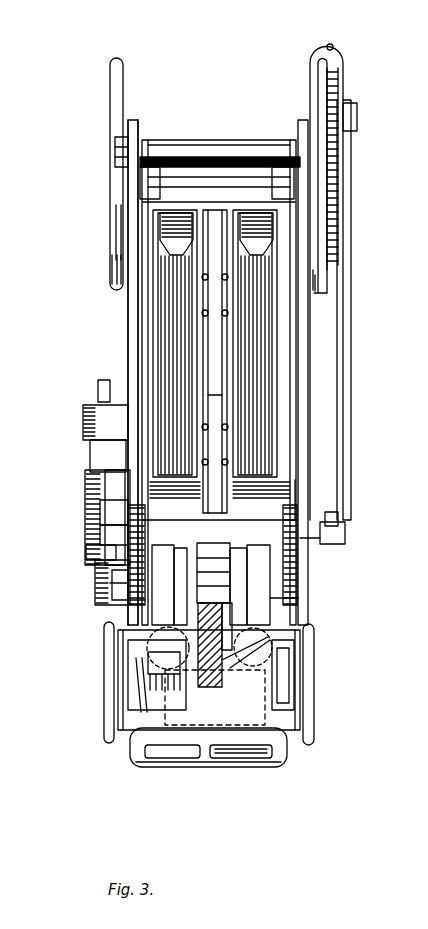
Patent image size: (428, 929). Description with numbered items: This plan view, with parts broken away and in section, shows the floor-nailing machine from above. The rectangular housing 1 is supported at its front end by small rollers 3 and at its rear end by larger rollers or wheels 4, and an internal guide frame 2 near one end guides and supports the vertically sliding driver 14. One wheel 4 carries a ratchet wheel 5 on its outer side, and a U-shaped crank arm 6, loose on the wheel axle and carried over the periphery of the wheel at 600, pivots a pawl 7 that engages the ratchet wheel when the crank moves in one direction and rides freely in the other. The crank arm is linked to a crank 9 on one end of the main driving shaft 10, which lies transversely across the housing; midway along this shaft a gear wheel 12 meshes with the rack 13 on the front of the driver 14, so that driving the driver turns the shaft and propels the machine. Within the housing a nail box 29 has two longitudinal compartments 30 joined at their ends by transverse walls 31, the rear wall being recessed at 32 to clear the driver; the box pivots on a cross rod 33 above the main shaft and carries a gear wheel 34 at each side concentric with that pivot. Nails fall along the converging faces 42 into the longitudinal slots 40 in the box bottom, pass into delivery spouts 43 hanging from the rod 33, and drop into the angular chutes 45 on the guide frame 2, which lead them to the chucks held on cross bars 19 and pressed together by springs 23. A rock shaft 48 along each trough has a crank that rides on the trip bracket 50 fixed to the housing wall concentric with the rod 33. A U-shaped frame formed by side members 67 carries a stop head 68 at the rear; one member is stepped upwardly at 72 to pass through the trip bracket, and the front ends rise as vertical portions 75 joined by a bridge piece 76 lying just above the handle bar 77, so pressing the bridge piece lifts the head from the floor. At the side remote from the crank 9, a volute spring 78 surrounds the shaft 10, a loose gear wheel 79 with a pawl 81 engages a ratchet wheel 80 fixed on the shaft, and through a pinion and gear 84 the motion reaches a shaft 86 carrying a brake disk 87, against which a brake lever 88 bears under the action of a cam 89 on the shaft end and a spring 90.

The housing 1 is at (128, 341).
The internal guide frame 2 is at (132, 636).
The small rollers 3 is at (108, 722).
The larger rollers or wheels 4 is at (123, 90).
The ratchet wheel 5 is at (338, 236).
The crank arm 6 is at (351, 97).
The pawl 7 is at (338, 82).
The crank 9 is at (338, 540).
The main driving shaft 10 is at (186, 766).
The gear wheel 12 is at (195, 578).
The rack 13 is at (233, 578).
The driver 14 is at (215, 697).
The cross bars or beams 19 is at (130, 657).
The springs 23 is at (134, 690).
The nail box 29 is at (296, 497).
The compartments 30 is at (160, 296).
The transverse walls 31 is at (230, 230).
The notch or recess 32 is at (220, 503).
The cross rod 33 is at (211, 577).
The gear wheel 34 is at (132, 600).
The longitudinal slots 40 is at (172, 347).
The converged faces 42 is at (168, 230).
The delivery spouts 43 is at (300, 570).
The chutes 45 is at (186, 660).
The rock shaft 48 is at (210, 397).
The trip bracket 50 is at (165, 166).
The side member 67 is at (133, 201).
The stop block or head 68 is at (222, 766).
The stepped portion 72 is at (118, 250).
The vertical portions 75 is at (148, 136).
The cross member or bridge piece 76 is at (190, 158).
The cross brace or handle bar 77 is at (248, 156).
The spring 78 is at (96, 566).
The gear wheel 79 is at (96, 596).
The ratchet wheel 80 is at (90, 532).
The pawl 81 is at (112, 584).
The gear 84 is at (100, 486).
The shaft 86 is at (84, 413).
The brake disk 87 is at (100, 390).
The brake lever 88 is at (92, 453).
The cam 89 is at (88, 545).
The spring 90 is at (100, 512).
The crank arm portion over wheel 600 is at (331, 44).